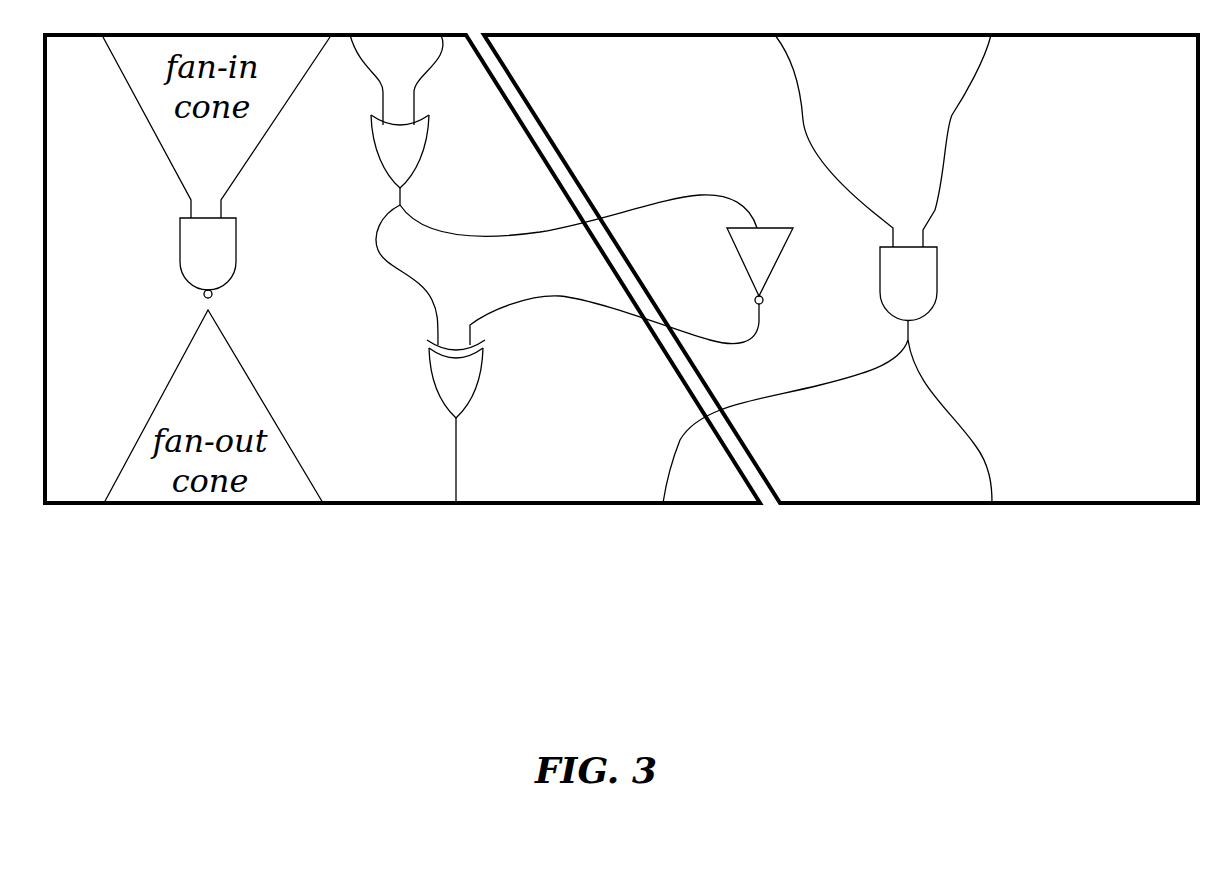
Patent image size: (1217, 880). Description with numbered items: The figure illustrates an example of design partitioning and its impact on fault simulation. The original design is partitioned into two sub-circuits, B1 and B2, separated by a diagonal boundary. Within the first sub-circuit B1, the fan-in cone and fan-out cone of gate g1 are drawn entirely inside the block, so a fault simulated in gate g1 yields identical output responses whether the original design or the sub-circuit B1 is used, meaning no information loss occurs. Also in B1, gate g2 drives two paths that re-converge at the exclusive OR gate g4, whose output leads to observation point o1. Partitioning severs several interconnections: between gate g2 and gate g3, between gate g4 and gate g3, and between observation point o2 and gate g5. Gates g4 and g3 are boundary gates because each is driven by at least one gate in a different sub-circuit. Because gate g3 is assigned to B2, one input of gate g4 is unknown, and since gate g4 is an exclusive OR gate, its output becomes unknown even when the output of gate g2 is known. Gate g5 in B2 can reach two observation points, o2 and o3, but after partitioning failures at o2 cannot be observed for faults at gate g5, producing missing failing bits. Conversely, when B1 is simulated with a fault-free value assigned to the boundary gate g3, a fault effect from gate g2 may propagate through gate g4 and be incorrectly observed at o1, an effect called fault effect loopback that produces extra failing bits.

The sub-circuit B1 is at (402, 269).
The sub-circuit B2 is at (841, 269).
The gate g1 is at (208, 258).
The gate g2 is at (396, 120).
The gate g3 is at (760, 266).
The exclusive OR gate g4 is at (456, 421).
The gate g5 is at (883, 187).
The observation point o1 is at (459, 535).
The observation point o2 is at (775, 448).
The observation point o3 is at (959, 448).